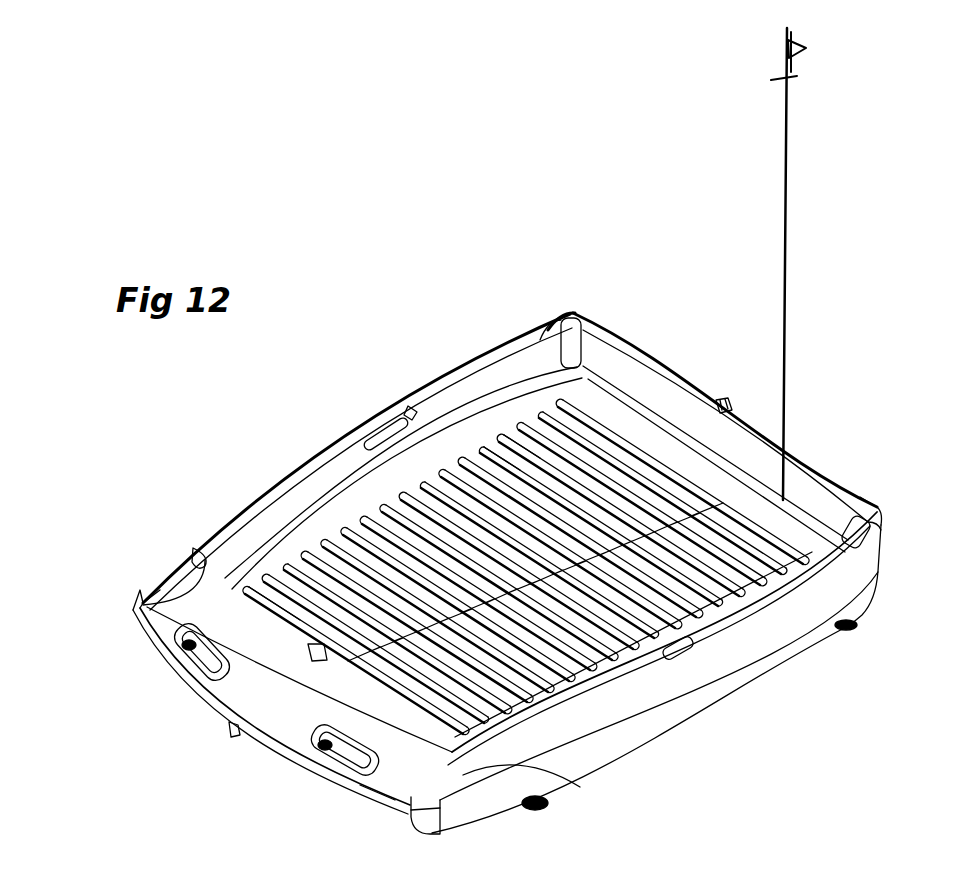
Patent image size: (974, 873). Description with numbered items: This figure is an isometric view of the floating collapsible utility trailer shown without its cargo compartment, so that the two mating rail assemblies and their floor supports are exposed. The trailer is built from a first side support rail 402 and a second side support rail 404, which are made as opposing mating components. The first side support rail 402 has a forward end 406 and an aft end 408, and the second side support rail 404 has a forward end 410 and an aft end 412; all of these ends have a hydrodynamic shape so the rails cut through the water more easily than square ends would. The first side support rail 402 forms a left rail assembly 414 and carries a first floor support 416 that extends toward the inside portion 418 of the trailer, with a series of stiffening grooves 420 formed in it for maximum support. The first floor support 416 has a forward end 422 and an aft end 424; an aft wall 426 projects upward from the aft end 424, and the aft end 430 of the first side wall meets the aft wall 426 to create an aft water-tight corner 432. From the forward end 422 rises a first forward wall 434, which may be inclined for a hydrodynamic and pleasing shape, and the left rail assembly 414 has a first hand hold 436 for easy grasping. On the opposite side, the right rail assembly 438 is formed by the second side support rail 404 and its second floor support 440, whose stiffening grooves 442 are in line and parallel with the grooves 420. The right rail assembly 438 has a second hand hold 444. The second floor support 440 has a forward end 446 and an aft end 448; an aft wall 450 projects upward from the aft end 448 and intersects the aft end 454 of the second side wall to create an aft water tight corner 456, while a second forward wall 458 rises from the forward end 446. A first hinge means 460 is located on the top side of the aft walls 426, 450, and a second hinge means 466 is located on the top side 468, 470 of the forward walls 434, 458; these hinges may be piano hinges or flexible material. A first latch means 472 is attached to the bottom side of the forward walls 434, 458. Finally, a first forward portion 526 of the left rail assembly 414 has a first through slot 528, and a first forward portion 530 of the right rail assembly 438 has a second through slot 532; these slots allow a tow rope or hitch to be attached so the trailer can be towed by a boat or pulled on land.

The first side support rail 402 is at (753, 640).
The second side support rail 404 is at (295, 512).
The forward end 406 is at (412, 806).
The aft end 408 is at (878, 572).
The forward end 410 is at (145, 610).
The aft end 412 is at (573, 312).
The left rail assembly 414 is at (645, 670).
The first floor support 416 is at (793, 530).
The inside portion 418 is at (680, 460).
The stiffening grooves 420 is at (775, 588).
The forward end 422 is at (300, 757).
The aft end 424 is at (860, 508).
The aft wall 426 is at (823, 515).
The aft end 430 is at (869, 514).
The aft water-tight corner 432 is at (848, 510).
The first forward wall 434 is at (330, 657).
The first hand hold 436 is at (689, 636).
The right rail assembly 438 is at (259, 493).
The second floor support 440 is at (610, 370).
The stiffening grooves 442 is at (521, 421).
The second hand hold 444 is at (372, 430).
The forward end 446 is at (247, 578).
The aft end 448 is at (657, 357).
The aft wall 450 is at (588, 393).
The aft end 454 is at (538, 388).
The aft water tight corner 456 is at (566, 320).
The second forward wall 458 is at (198, 545).
The first hinge means 460 is at (723, 409).
The second hinge means 466 is at (311, 653).
The top side 468 is at (400, 802).
The top side 470 is at (143, 603).
The first latch means 472 is at (230, 727).
The first forward portion 526 is at (542, 802).
The first through slot 528 is at (340, 754).
The first forward portion 530 is at (185, 568).
The second through slot 532 is at (208, 664).